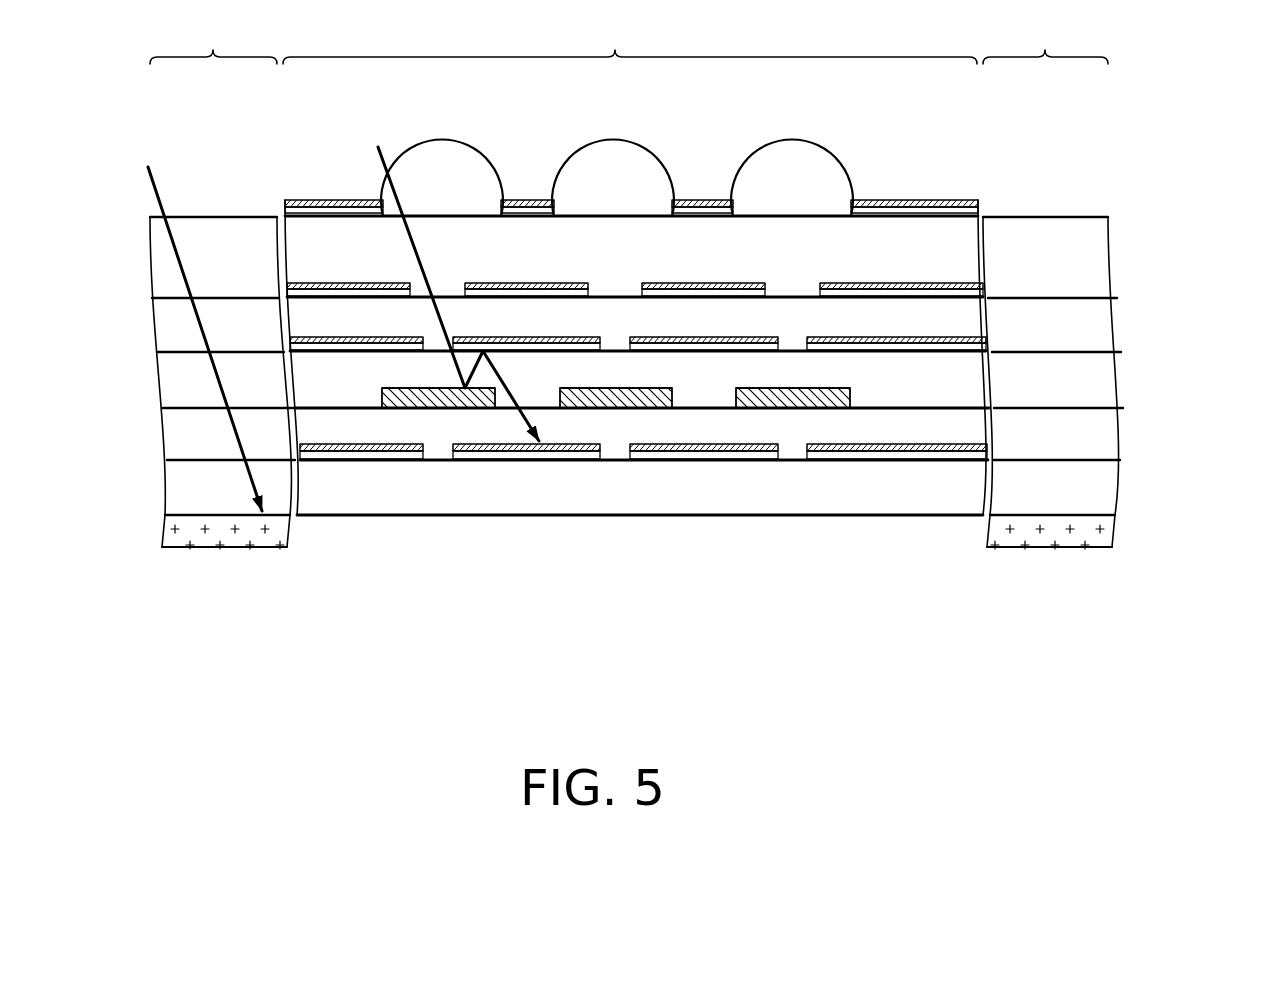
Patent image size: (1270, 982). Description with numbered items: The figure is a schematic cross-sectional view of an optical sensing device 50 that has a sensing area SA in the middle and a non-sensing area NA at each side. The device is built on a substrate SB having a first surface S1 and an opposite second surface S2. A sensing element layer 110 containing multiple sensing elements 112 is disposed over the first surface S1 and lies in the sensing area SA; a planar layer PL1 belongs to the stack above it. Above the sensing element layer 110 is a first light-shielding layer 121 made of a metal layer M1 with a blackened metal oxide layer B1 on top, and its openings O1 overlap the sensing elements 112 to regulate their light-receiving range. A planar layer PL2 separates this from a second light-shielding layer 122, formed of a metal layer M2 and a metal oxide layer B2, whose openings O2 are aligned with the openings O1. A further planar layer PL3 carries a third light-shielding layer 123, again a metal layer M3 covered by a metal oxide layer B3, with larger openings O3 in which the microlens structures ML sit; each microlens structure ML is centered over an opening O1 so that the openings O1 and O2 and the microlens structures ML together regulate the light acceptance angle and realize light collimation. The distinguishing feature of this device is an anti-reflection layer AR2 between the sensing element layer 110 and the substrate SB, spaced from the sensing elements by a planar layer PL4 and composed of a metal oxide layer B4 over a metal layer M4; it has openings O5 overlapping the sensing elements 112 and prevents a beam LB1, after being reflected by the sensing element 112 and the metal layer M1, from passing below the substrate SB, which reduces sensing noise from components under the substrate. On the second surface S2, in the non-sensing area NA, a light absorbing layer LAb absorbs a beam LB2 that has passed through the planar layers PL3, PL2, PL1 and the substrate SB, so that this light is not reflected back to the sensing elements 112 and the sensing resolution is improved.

The optical sensing device 50 is at (1252, 605).
The non-sensing area NA is at (634, 281).
The sensing area SA is at (630, 39).
The third light-shielding layer 123 is at (76, 63).
The metal oxide layer B3 is at (285, 203).
The metal layer M3 is at (295, 212).
The microlens structure ML is at (446, 168).
The planar layer PL3 is at (157, 224).
The second light-shielding layer 122 is at (76, 200).
The metal oxide layer B2 is at (340, 283).
The metal layer M2 is at (300, 296).
The planar layer PL2 is at (172, 312).
The first light-shielding layer 121 is at (76, 297).
The metal oxide layer B1 is at (322, 336).
The metal layer M1 is at (310, 348).
The sensing element layer 110 is at (76, 368).
The planar layer PL1 is at (176, 367).
The sensing element 112 is at (382, 400).
The planar layer PL4 is at (177, 443).
The anti-reflection layer AR2 is at (80, 603).
The metal oxide layer B4 is at (325, 452).
The metal layer M4 is at (353, 459).
The substrate SB is at (174, 489).
The first surface S1 is at (1061, 456).
The second surface S2 is at (1067, 517).
The light absorbing layer LAb is at (205, 545).
The beam LB2 is at (147, 167).
The beam LB1 is at (376, 151).
The opening O3 is at (846, 212).
The opening O2 is at (816, 292).
The opening O1 is at (784, 345).
The opening O5 is at (805, 452).